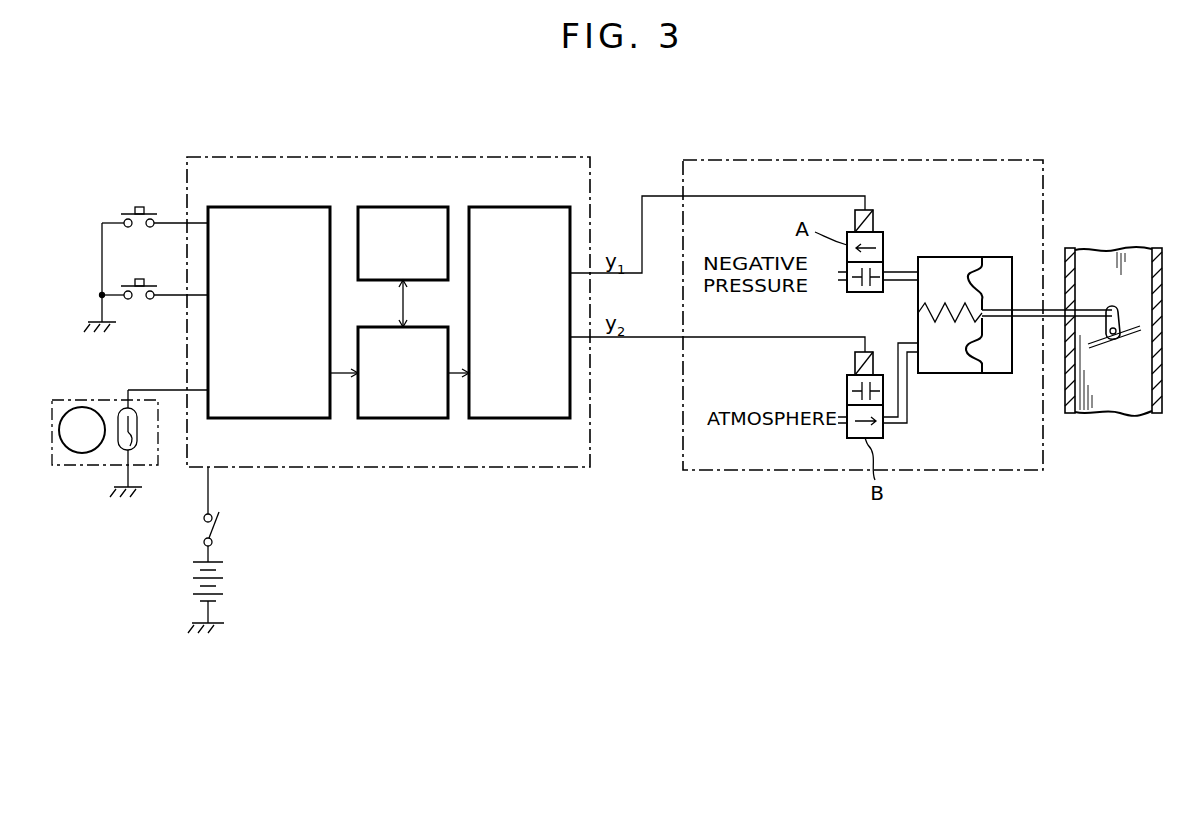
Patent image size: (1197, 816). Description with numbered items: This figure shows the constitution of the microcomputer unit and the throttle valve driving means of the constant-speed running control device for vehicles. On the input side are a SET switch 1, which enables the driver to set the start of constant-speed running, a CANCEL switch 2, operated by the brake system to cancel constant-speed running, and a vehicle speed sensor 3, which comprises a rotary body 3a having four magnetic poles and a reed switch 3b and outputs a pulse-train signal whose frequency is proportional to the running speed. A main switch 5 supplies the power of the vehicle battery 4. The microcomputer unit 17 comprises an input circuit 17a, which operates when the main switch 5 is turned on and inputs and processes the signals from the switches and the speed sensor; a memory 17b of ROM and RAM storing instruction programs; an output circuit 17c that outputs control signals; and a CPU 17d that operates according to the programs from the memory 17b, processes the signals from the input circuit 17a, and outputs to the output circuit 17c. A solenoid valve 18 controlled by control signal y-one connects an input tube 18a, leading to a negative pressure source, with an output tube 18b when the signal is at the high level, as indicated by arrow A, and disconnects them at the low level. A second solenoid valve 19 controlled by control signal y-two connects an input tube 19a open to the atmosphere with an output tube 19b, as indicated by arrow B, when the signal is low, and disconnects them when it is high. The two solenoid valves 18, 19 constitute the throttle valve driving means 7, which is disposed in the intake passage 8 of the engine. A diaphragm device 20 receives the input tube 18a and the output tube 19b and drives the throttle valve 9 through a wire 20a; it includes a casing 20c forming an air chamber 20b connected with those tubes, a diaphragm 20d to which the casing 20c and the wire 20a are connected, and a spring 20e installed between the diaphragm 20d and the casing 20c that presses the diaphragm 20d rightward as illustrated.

The SET switch 1 is at (131, 210).
The CANCEL switch 2 is at (152, 283).
The vehicle speed sensor 3 is at (117, 433).
The rotary body 3a is at (84, 407).
The reed switch 3b is at (133, 446).
The battery 4 is at (224, 585).
The main switch 5 is at (224, 530).
The throttle valve driving means 7 is at (920, 160).
The intake passage 8 is at (1133, 256).
The throttle valve 9 is at (1136, 330).
The microcomputer unit 17 is at (320, 157).
The input circuit 17a is at (266, 207).
The memory 17b is at (403, 207).
The output circuit 17c is at (508, 207).
The CPU 17d is at (398, 418).
The solenoid valve 18 is at (871, 255).
The input tube 18a is at (900, 270).
The output tube 18b is at (843, 283).
The solenoid valve 19 is at (858, 405).
The input tube 19a is at (845, 426).
The output tube 19b is at (893, 424).
The diaphragm device 20 is at (1016, 339).
The wire 20a is at (1053, 306).
The air chamber 20b is at (965, 257).
The casing 20c is at (982, 373).
The diaphragm 20d is at (982, 335).
The spring 20e is at (945, 324).